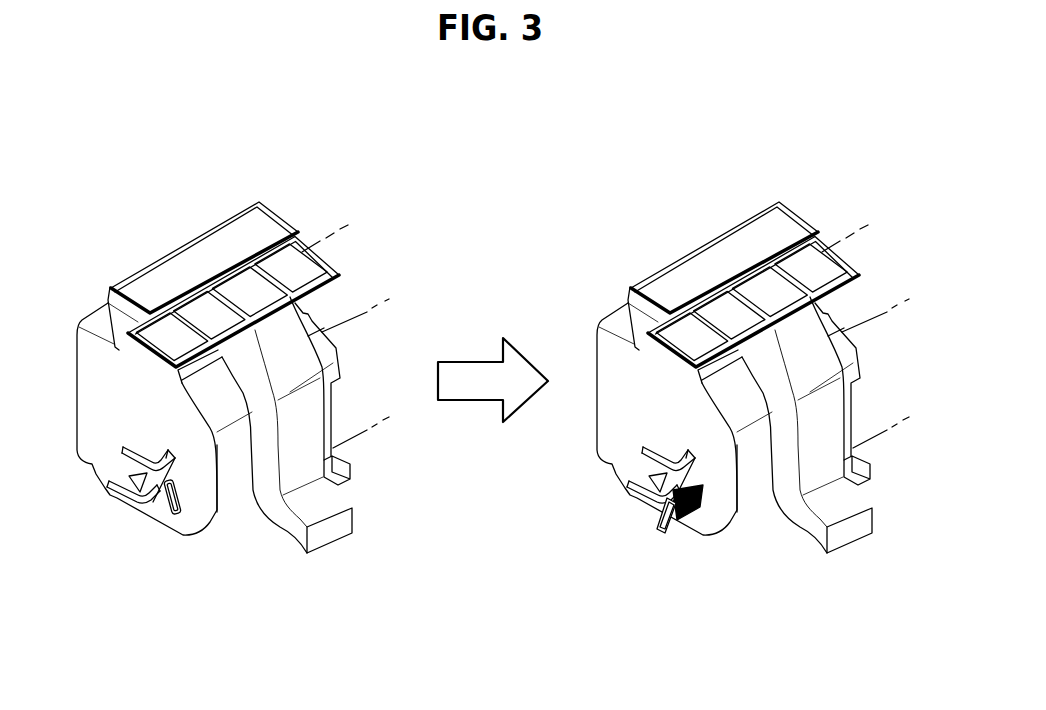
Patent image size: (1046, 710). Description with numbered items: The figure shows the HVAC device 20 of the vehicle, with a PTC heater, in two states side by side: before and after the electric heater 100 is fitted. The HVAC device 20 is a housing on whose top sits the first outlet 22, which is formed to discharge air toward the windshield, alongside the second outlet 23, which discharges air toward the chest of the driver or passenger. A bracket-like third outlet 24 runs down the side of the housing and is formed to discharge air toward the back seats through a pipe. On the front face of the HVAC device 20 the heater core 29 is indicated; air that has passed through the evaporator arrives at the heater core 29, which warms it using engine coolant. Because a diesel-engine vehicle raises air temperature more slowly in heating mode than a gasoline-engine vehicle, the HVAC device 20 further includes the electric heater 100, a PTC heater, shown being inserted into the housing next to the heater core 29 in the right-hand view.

The HVAC device 20 is at (147, 179).
The first outlet 22 is at (249, 203).
The second outlet 23 is at (338, 259).
The third outlet 24 is at (336, 532).
The heater core 29 is at (137, 503).
The electric heater (PTC heater) 100 is at (171, 512).